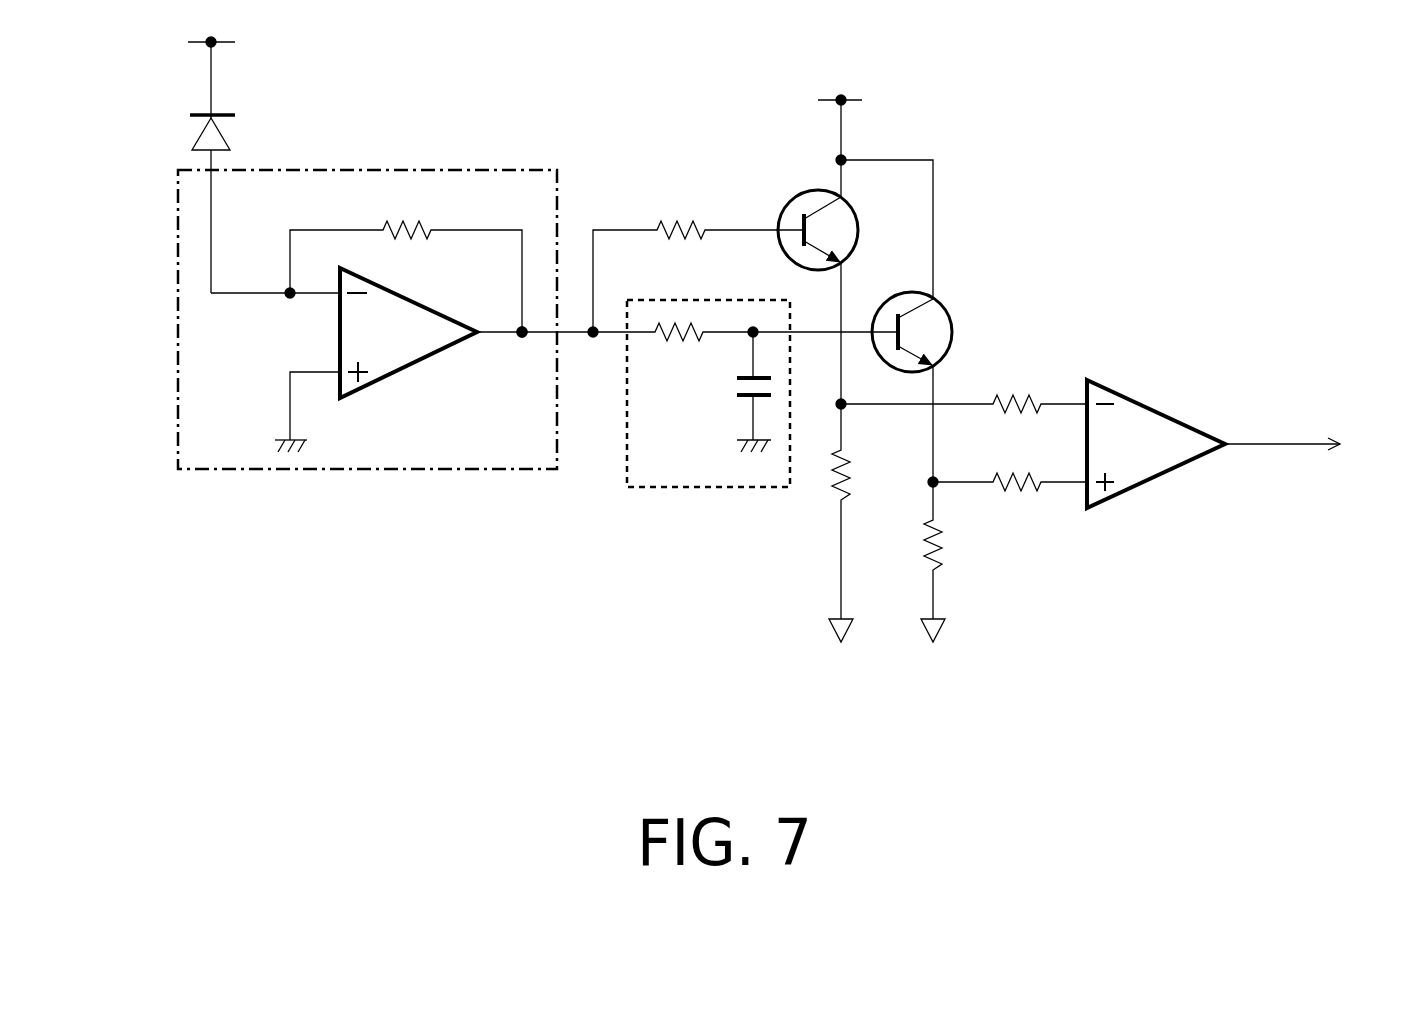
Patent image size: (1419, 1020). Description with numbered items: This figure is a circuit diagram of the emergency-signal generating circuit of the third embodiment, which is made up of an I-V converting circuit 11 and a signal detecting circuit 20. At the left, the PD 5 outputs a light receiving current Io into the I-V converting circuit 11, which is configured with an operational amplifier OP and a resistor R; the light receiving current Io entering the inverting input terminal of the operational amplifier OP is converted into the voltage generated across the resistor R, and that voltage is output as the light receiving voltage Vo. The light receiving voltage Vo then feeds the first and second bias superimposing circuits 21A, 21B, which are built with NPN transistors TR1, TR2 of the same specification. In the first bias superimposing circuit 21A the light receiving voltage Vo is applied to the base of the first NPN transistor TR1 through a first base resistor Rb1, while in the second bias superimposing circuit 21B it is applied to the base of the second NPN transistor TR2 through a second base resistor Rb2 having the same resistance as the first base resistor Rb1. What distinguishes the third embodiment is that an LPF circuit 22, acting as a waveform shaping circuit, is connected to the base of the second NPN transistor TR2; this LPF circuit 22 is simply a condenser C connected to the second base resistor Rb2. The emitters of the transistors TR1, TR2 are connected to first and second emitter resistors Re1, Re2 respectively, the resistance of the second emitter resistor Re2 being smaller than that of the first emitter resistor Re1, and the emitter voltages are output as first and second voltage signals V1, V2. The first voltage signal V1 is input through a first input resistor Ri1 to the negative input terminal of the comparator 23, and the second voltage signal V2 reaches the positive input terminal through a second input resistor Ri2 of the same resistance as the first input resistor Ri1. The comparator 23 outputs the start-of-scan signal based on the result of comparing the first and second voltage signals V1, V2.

The PD 5 is at (192, 131).
The I-V converting circuit 11 is at (177, 395).
The SOS signal detecting circuit 20 is at (968, 138).
The first bias superimposing circuit 21A is at (867, 141).
The second bias superimposing circuit 21B is at (950, 243).
The LPF circuit 22 is at (675, 488).
The comparator 23 is at (1125, 445).
The light receiving current Io is at (212, 222).
The resistor R is at (420, 207).
The operational amplifier OP is at (410, 370).
The light receiving voltage Vo is at (543, 335).
The first base resistor Rb1 is at (685, 217).
The second base resistor Rb2 is at (677, 345).
The condenser C is at (733, 383).
The first NPN transistor TR1 is at (805, 188).
The second NPN transistor TR2 is at (992, 300).
The first emitter resistor Re1 is at (855, 460).
The second emitter resistor Re2 is at (947, 548).
The first input resistor Ri1 is at (1022, 388).
The second input resistor Ri2 is at (1013, 495).
The first voltage signal V1 is at (910, 405).
The second voltage signal V2 is at (958, 478).